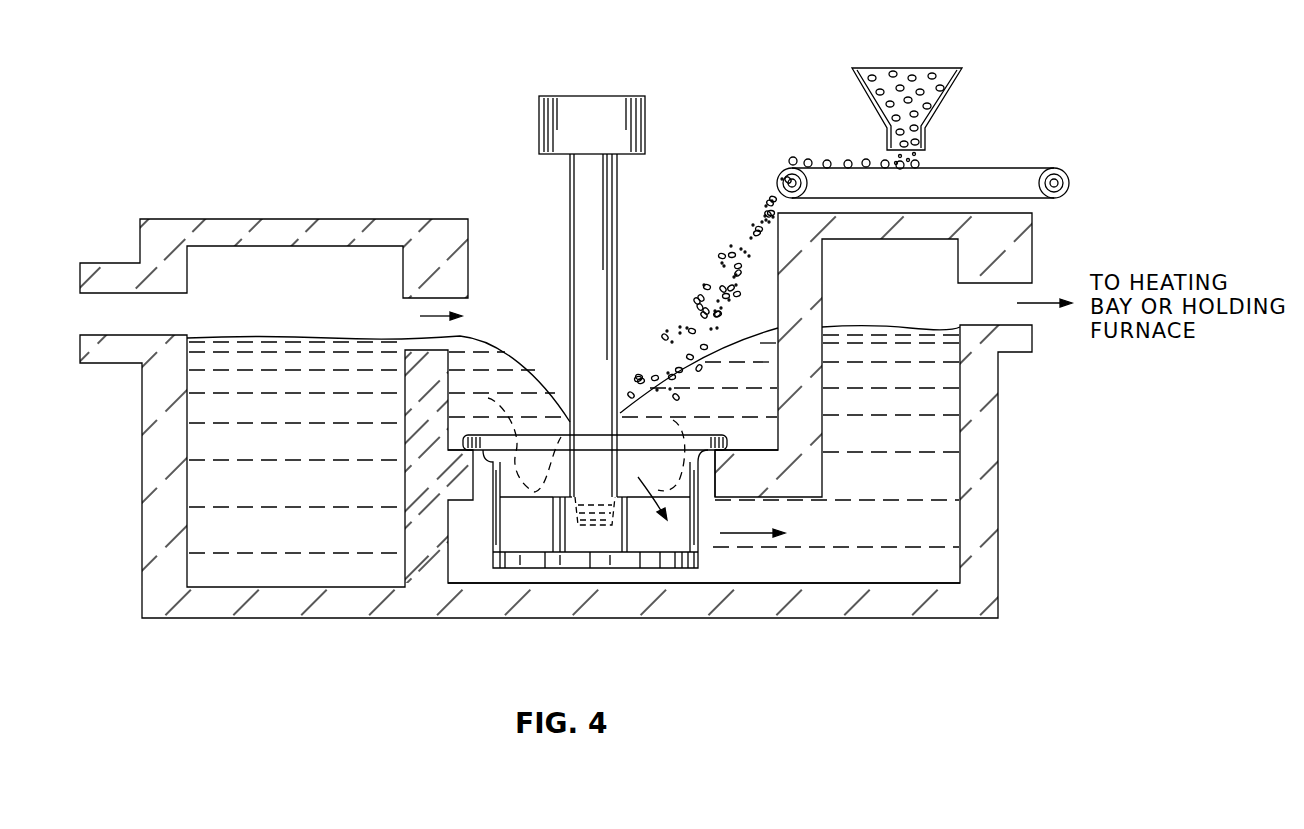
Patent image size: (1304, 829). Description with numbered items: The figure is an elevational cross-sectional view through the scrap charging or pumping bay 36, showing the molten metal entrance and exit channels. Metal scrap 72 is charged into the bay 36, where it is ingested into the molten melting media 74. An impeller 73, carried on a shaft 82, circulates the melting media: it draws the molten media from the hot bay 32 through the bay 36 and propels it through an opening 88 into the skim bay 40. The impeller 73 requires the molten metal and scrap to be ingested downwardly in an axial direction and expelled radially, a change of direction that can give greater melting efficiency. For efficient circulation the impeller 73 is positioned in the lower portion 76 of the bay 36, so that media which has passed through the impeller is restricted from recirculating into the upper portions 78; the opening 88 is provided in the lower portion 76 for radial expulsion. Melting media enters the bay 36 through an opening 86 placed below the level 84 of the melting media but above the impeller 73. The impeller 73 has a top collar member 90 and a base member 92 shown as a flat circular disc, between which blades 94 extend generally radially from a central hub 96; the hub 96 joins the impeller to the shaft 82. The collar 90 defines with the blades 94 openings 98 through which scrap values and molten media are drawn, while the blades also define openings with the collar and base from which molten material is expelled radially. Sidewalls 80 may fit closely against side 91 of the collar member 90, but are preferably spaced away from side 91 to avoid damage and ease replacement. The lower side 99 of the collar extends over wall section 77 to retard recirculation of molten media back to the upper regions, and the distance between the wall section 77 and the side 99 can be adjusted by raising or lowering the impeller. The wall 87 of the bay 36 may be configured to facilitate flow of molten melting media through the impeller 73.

The bay 32 is at (295, 577).
The bay 36 is at (540, 208).
The skim bay 40 is at (940, 517).
The metal scrap 72 is at (917, 102).
The impeller 73 is at (559, 520).
The molten melting media 74 is at (724, 413).
The lower portion 76 is at (460, 522).
The wall section 77 is at (452, 440).
The upper portions 78 is at (460, 397).
The sidewalls 80 is at (492, 440).
The shaft 82 is at (617, 200).
The level 84 is at (280, 335).
The opening 86 is at (430, 310).
The wall 87 is at (780, 343).
The opening 88 is at (767, 575).
The collar member 90 is at (586, 452).
The side 91 is at (490, 470).
The base member 92 is at (637, 560).
The blades 94 is at (485, 548).
The central hub 96 is at (593, 545).
The openings 98 is at (566, 436).
The lower side 99 is at (715, 450).